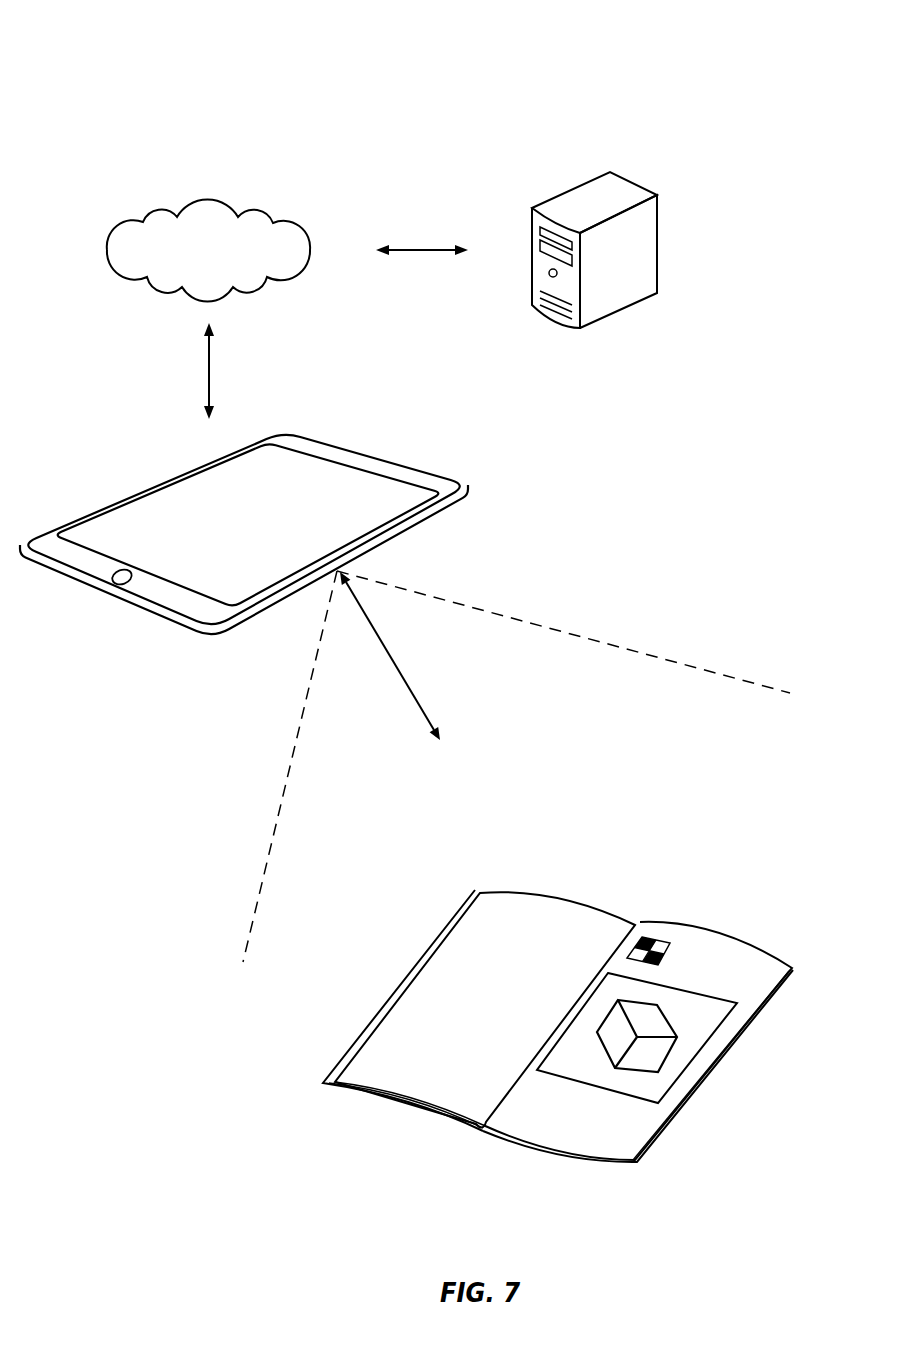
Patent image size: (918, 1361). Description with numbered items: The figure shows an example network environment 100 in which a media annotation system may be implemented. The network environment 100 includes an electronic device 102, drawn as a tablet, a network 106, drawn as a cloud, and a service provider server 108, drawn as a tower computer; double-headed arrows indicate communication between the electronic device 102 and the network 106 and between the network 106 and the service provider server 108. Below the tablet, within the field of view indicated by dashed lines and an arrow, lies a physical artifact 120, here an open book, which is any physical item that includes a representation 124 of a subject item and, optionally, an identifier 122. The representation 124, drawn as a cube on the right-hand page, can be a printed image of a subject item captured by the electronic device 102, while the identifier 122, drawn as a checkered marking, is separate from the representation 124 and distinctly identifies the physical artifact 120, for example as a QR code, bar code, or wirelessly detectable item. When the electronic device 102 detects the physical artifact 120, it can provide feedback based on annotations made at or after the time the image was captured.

The network environment 100 is at (72, 94).
The electronic device 102 is at (43, 543).
The network 106 is at (132, 223).
The service provider server 108 is at (573, 188).
The physical artifact 120 is at (528, 891).
The identifier 122 is at (655, 935).
The representation of a subject item 124 is at (677, 1032).